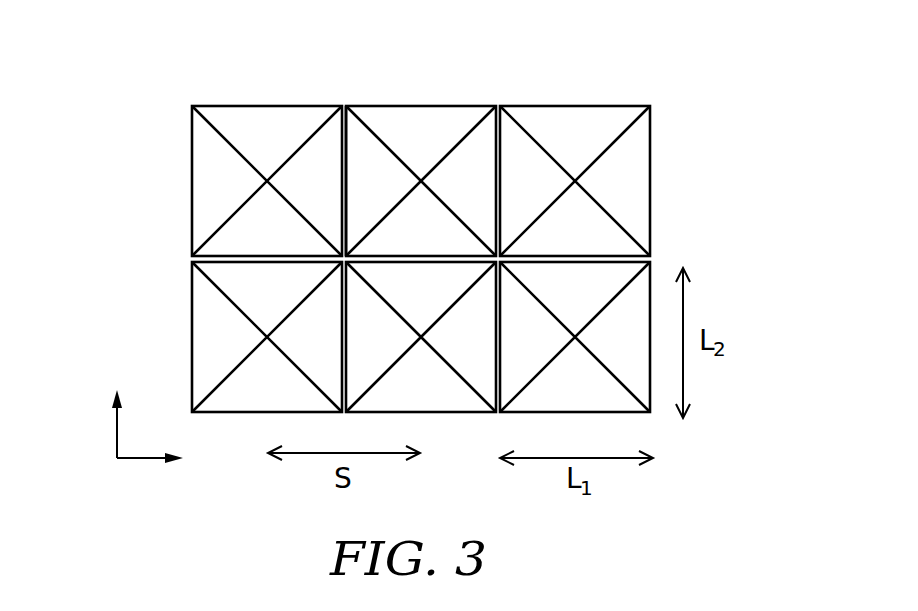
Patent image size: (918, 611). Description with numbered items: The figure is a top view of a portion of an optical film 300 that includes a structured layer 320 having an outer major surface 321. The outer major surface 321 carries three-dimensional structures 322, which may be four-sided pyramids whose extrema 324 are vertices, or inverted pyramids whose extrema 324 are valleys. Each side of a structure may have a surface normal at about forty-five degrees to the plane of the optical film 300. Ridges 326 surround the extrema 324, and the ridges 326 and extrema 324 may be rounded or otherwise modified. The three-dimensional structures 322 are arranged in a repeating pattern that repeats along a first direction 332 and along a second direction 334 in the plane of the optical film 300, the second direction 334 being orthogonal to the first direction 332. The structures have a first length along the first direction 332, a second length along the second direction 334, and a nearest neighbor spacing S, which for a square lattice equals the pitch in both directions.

The optical film 300 is at (697, 53).
The structured layer 320 is at (637, 170).
The outer major surface 321 is at (573, 131).
The three-dimensional structures 322 is at (212, 176).
The extrema 324 is at (268, 181).
The ridges 326 is at (349, 152).
The first direction 332 is at (137, 460).
The second direction 334 is at (117, 436).